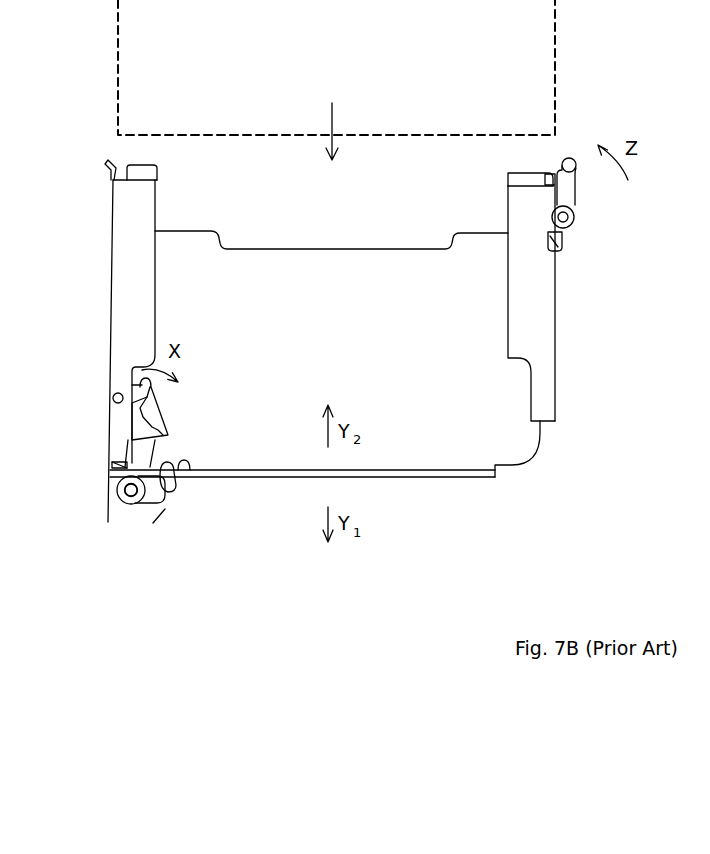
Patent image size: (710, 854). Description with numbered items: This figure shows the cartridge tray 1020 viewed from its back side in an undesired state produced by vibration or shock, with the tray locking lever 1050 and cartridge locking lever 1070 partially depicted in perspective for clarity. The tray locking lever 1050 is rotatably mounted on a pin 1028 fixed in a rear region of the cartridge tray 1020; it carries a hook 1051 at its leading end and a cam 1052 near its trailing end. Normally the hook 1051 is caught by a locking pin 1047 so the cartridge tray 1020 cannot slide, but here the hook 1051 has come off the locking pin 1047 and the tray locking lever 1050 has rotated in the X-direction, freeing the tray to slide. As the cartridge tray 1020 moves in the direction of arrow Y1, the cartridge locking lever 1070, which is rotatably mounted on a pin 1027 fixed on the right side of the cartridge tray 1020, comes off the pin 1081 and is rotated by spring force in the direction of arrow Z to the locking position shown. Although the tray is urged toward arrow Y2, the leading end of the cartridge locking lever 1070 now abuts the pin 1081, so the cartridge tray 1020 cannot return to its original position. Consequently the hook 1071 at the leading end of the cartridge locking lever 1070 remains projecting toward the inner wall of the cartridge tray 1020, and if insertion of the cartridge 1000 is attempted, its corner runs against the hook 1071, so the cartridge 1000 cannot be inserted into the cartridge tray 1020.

The cartridge 1000 is at (557, 35).
The cartridge tray 1020 is at (408, 477).
The pin 1027 is at (561, 236).
The pin 1028 is at (132, 495).
The locking pin 1047 is at (113, 398).
The tray locking lever 1050 is at (112, 473).
The hook 1051 is at (155, 407).
The cam 1052 is at (182, 470).
The cartridge locking lever 1070 is at (573, 205).
The hook 1071 is at (547, 180).
The pin 1081 is at (578, 168).